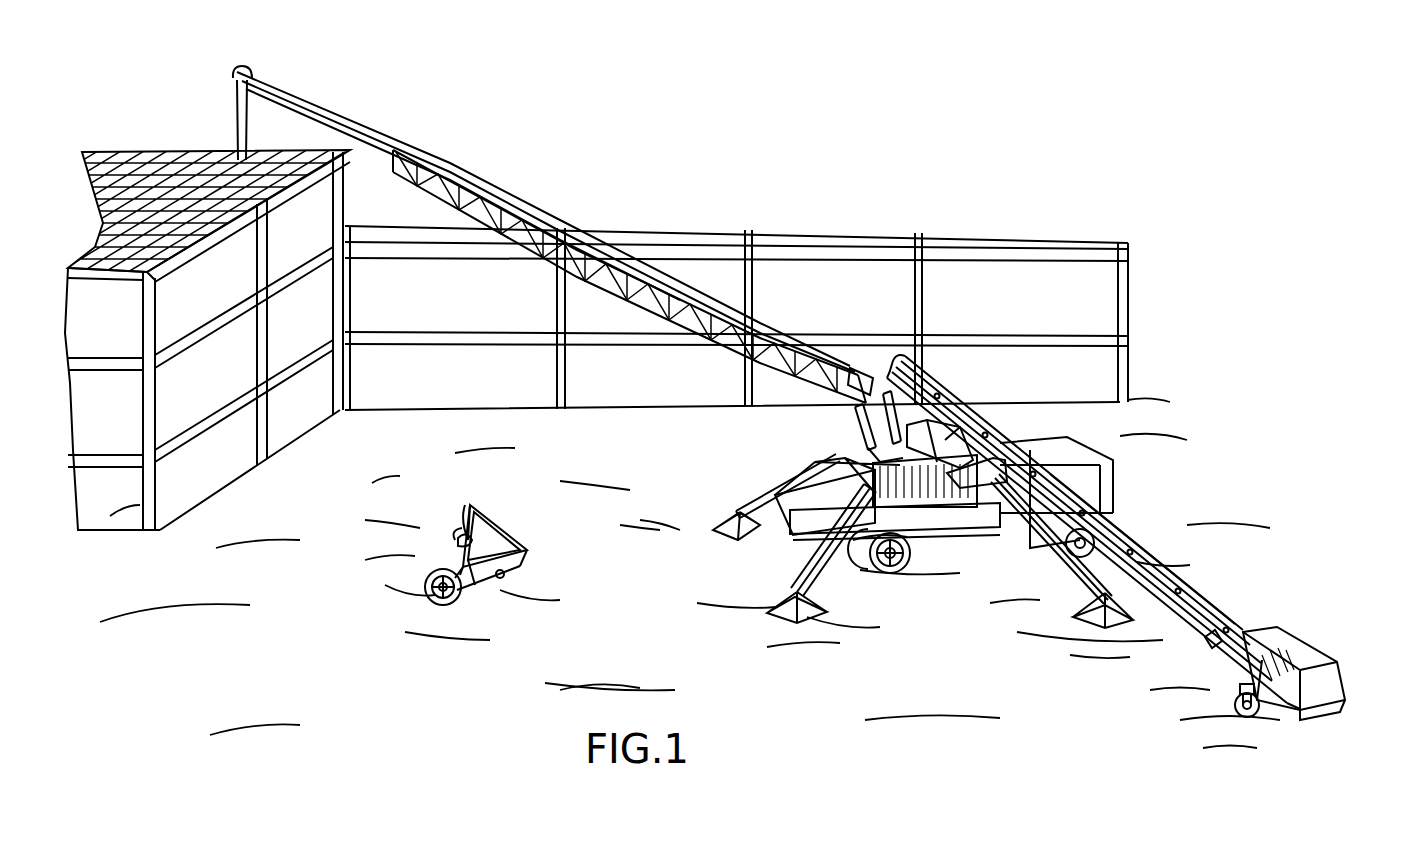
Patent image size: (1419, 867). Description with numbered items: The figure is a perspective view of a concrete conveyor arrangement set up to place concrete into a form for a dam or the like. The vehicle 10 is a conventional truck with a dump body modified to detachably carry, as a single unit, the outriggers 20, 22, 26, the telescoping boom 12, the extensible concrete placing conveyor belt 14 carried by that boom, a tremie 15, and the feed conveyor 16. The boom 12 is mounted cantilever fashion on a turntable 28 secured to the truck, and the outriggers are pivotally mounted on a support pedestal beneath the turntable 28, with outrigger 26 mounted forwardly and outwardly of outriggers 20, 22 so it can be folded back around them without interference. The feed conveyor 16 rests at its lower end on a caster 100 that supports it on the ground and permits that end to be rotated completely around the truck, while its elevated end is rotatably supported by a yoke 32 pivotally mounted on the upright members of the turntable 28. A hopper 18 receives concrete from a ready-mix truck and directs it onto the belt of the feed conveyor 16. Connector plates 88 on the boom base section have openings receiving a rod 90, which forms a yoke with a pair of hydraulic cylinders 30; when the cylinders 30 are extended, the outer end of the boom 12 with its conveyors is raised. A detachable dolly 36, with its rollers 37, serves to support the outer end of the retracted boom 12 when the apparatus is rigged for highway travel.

The vehicle 10 is at (1145, 482).
The telescoping boom 12 is at (643, 302).
The extensible concrete placing conveyor belt 14 is at (370, 133).
The tremie 15 is at (234, 124).
The feed conveyor 16 is at (1194, 592).
The hopper 18 is at (1293, 657).
The outrigger 20 is at (783, 485).
The outrigger 22 is at (833, 572).
The outrigger 26 is at (1002, 541).
The turntable 28 is at (907, 443).
The hydraulic cylinder 30 is at (866, 430).
The yoke 32 is at (900, 358).
The detachable dolly 36 is at (510, 505).
The carriage roller 37 is at (470, 500).
The connector plate 88 is at (887, 373).
The rod 90 is at (860, 370).
The caster 100 is at (1250, 712).